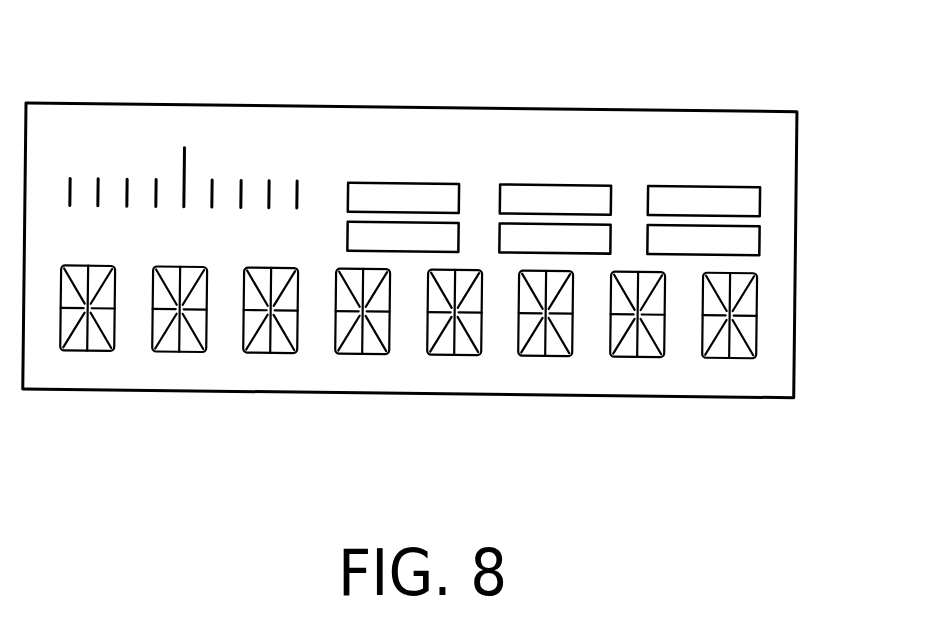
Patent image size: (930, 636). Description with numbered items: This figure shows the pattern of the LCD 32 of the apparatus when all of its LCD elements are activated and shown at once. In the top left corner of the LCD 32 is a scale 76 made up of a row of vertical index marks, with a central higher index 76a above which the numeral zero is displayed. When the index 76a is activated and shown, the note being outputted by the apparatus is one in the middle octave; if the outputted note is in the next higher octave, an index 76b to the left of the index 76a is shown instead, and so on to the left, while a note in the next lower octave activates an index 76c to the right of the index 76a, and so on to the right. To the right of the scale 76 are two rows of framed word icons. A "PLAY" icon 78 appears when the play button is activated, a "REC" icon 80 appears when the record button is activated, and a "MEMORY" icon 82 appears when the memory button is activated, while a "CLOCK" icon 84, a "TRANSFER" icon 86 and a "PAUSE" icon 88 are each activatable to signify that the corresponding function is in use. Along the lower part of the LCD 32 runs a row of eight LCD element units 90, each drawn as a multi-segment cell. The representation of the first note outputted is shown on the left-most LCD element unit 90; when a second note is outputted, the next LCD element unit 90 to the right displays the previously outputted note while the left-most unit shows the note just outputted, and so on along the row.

The LCD 32 is at (781, 164).
The scale 76 is at (237, 116).
The central higher index 76a is at (183, 167).
The index 76b is at (157, 197).
The index 76c is at (218, 190).
The PLAY icon 78 is at (440, 183).
The REC icon 80 is at (570, 183).
The MEMORY icon 82 is at (710, 187).
The CLOCK icon 84 is at (410, 250).
The TRANSFER icon 86 is at (593, 252).
The PAUSE icon 88 is at (762, 240).
The LCD element unit 90 is at (100, 350).